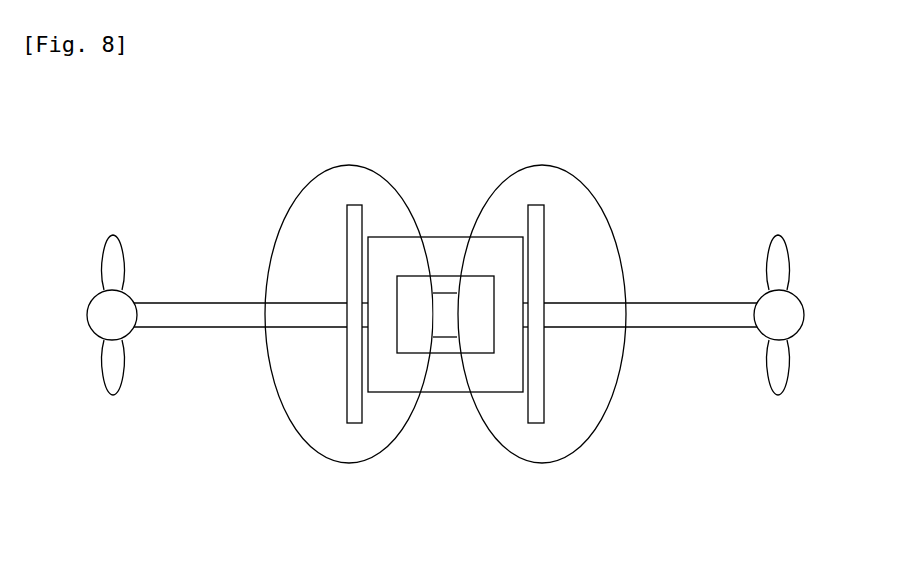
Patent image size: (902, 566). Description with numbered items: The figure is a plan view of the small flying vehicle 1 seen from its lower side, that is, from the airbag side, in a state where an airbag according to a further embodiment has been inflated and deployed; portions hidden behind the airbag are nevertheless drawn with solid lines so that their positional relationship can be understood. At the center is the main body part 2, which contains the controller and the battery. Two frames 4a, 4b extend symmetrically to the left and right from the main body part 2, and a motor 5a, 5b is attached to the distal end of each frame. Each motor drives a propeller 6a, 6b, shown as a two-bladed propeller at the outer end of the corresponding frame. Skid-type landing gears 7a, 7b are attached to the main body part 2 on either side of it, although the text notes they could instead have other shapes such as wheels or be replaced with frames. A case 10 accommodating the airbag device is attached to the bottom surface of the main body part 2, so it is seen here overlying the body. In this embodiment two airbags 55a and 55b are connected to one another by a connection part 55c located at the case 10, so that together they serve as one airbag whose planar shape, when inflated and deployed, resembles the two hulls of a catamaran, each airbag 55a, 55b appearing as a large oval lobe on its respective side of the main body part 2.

The small flying vehicle 1 is at (454, 408).
The main body part 2 is at (430, 237).
The case 10 is at (447, 288).
The frame 4a is at (194, 302).
The frame 4b is at (682, 328).
The motor 5a is at (98, 325).
The motor 5b is at (787, 325).
The propeller 6a is at (110, 272).
The propeller 6b is at (778, 263).
The landing gear 7a is at (347, 239).
The landing gear 7b is at (547, 268).
The airbag 55a is at (562, 168).
The airbag 55b is at (353, 165).
The connection part 55c is at (445, 332).